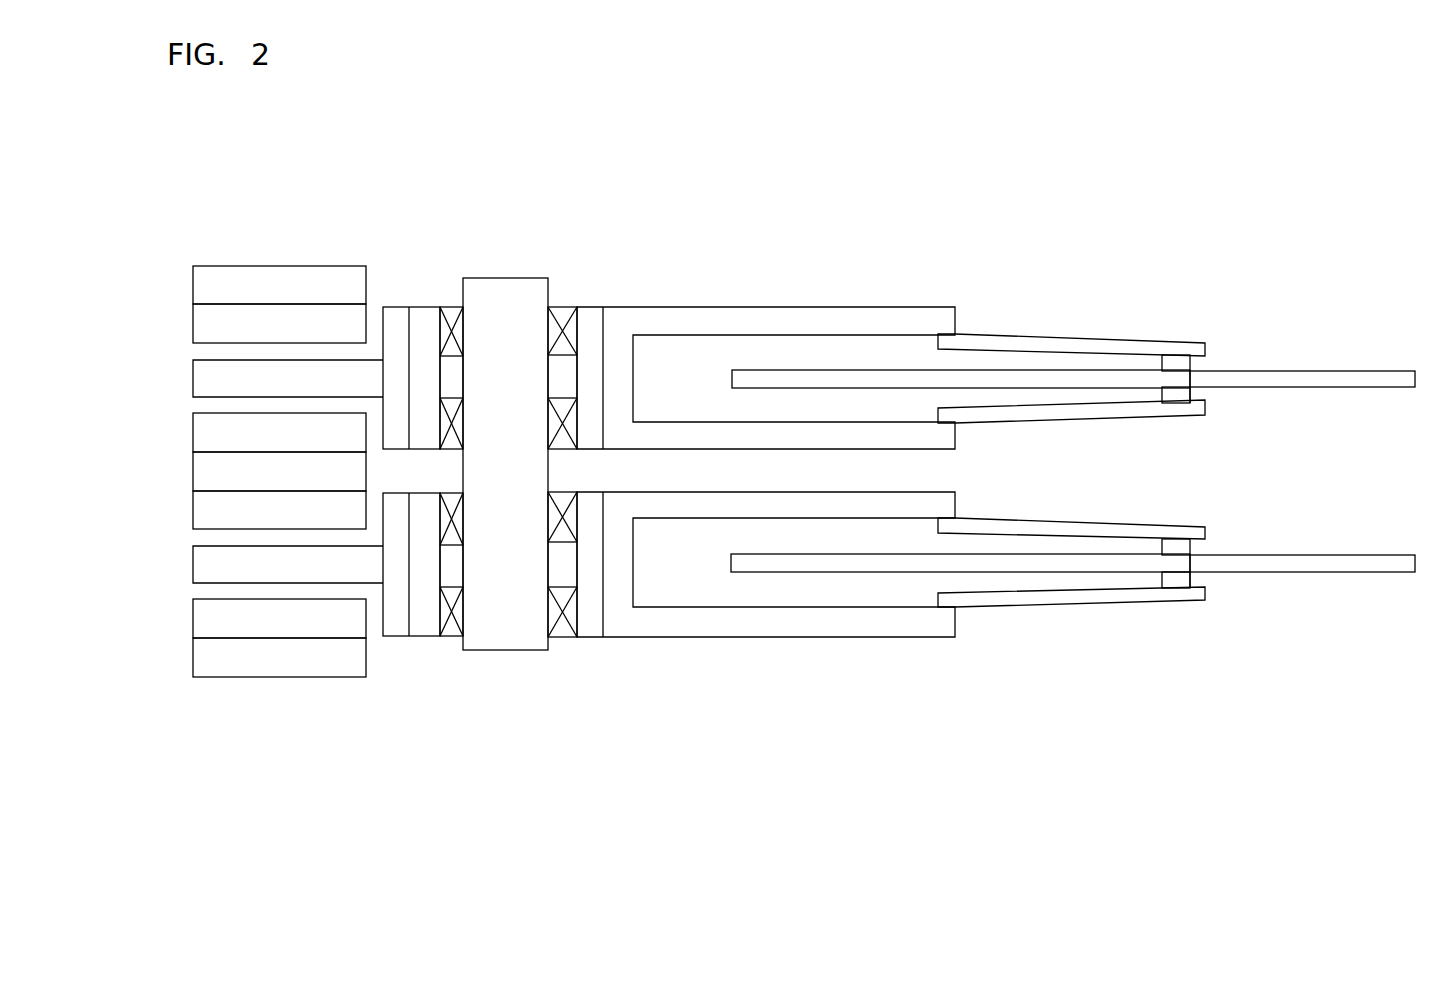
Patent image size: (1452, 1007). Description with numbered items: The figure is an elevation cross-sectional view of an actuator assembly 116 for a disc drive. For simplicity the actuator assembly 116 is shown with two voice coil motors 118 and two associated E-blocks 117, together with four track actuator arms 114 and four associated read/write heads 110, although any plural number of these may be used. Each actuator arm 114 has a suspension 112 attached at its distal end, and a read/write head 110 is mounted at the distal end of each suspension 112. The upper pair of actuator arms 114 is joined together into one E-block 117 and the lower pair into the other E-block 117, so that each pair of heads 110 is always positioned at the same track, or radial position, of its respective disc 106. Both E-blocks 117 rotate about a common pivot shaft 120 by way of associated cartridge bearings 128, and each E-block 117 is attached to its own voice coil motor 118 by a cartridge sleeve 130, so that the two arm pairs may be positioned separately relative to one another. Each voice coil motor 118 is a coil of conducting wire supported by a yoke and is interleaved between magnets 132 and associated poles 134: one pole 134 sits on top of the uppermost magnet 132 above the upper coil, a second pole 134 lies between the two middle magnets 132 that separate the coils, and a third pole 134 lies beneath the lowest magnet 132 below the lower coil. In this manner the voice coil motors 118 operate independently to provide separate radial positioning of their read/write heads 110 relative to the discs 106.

The disc 106 is at (1385, 371).
The read/write head 110 is at (1192, 367).
The suspension 112 is at (1046, 335).
The track actuator arm 114 is at (868, 306).
The actuator assembly 116 is at (1118, 194).
The E-block 117 is at (615, 353).
The voice coil motor 118 is at (203, 382).
The common pivot shaft 120 is at (498, 277).
The cartridge bearing 128 is at (556, 306).
The cartridge sleeve 130 is at (425, 310).
The magnet 132 is at (208, 325).
The pole 134 is at (257, 280).